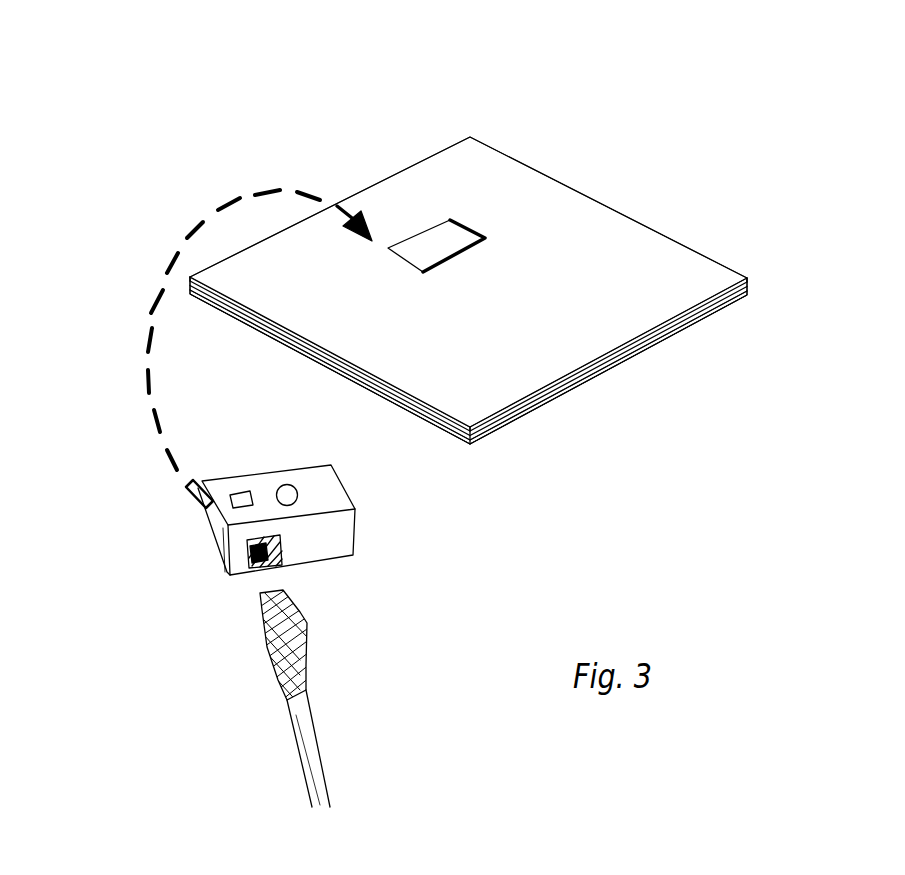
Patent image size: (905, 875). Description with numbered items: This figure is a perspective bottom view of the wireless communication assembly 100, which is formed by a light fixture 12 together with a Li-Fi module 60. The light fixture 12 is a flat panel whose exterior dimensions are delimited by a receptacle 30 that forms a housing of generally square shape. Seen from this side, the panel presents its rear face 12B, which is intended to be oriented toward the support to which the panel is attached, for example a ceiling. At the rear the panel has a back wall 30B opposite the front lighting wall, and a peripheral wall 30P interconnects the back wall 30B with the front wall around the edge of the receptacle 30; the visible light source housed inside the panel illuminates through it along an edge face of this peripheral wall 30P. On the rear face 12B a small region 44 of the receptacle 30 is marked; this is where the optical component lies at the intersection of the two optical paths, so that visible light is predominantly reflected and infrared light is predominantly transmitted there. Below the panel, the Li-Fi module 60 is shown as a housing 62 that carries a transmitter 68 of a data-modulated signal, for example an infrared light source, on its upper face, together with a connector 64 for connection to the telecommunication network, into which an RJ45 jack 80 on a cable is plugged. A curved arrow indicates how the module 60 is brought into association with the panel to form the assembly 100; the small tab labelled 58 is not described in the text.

The communication assembly 100 is at (224, 158).
The light fixture 12 is at (500, 128).
The rear face 12B is at (467, 197).
The region 44 is at (410, 240).
The back wall 30B is at (633, 237).
The receptacle 30 is at (754, 282).
The peripheral wall 30P is at (620, 365).
The housing 62 is at (355, 522).
The transmitter 68 is at (286, 485).
The connector tab 58 is at (200, 494).
The connector 64 is at (227, 572).
The Li-Fi module 60 is at (222, 605).
The RJ45 jack 80 is at (297, 763).